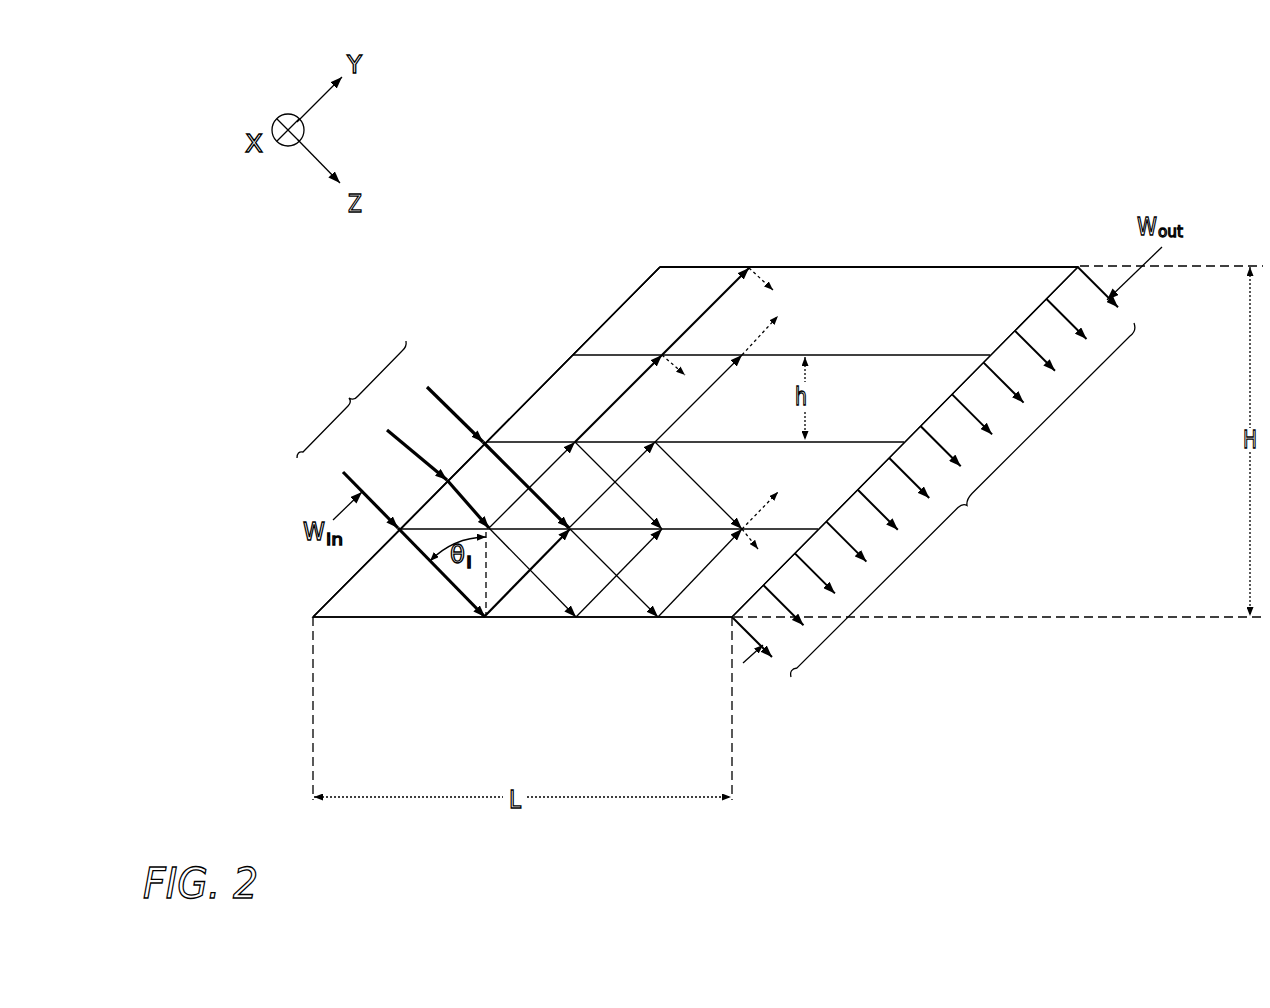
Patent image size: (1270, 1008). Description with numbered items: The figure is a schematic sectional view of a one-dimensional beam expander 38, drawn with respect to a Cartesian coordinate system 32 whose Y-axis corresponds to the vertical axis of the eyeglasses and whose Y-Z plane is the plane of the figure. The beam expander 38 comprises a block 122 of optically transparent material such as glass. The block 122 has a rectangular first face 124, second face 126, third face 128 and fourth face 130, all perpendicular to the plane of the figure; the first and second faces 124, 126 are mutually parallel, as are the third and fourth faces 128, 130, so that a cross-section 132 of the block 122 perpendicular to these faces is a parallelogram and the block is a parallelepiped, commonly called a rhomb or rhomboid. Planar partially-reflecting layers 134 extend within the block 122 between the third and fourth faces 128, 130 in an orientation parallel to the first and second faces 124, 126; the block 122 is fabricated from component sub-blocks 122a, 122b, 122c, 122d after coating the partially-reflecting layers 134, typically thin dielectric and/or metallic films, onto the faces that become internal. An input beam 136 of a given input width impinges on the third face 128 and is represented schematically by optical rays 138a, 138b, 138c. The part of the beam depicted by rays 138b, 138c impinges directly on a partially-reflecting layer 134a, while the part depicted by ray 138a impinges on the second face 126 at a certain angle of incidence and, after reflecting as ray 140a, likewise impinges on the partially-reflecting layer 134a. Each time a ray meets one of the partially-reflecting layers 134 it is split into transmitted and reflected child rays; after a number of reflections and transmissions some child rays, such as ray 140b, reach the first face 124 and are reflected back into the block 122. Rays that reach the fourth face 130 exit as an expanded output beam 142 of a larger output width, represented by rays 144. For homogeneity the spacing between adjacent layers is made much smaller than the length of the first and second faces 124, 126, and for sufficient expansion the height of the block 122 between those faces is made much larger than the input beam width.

The Cartesian coordinate system 32 is at (193, 76).
The 1D beam expander 38 is at (895, 130).
The block 122 is at (962, 282).
The component sub-block 122a is at (607, 340).
The component sub-block 122b is at (577, 374).
The component sub-block 122c is at (797, 479).
The component sub-block 122d is at (340, 603).
The first face 124 is at (717, 265).
The second face 126 is at (683, 620).
The third face 128 is at (630, 297).
The fourth face 130 is at (1080, 360).
The cross-section 132 is at (862, 280).
The partially-reflecting layers 134 is at (850, 357).
The partially-reflecting layer 134a is at (615, 532).
The input beam 136 is at (351, 399).
The optical ray 138a is at (343, 470).
The optical ray 138b is at (387, 432).
The optical ray 138c is at (427, 387).
The ray 140a is at (513, 600).
The ray 140b is at (717, 300).
The expanded output beam 142 is at (963, 500).
The rays 144 is at (1022, 330).